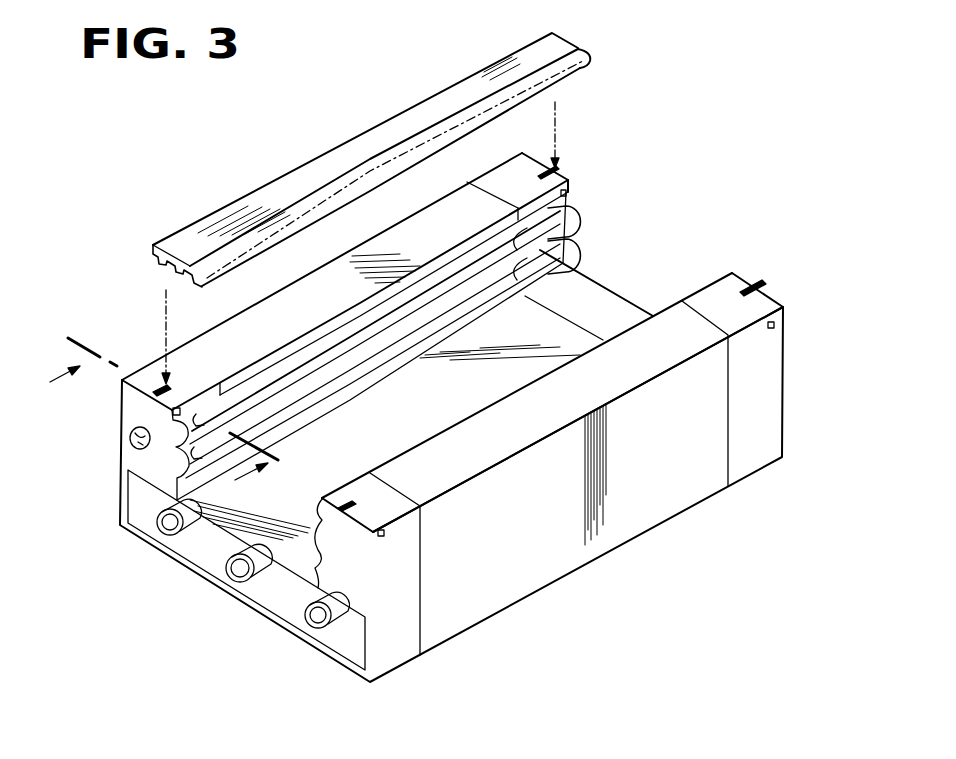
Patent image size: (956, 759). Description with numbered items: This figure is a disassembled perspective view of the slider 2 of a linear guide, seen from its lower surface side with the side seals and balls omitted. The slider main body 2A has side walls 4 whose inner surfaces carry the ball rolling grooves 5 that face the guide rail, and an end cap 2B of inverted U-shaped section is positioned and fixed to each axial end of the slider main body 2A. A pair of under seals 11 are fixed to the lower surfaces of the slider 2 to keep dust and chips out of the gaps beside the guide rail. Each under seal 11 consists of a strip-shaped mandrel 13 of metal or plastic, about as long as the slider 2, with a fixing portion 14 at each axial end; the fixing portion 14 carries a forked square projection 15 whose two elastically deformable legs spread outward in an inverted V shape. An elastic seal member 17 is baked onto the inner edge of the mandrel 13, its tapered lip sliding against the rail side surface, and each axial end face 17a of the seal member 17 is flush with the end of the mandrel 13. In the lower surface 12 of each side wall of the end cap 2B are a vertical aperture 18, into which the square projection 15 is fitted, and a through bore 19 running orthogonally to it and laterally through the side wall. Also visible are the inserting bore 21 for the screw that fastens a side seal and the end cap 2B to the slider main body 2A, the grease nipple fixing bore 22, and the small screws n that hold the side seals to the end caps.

The slider 2 is at (578, 568).
The slider main body 2A is at (497, 600).
The end cap 2B is at (388, 660).
The side wall 4 is at (353, 672).
The ball rolling groove 5 is at (372, 330).
The under seal 11 is at (308, 160).
The lower surface 12 is at (368, 495).
The mandrel 13 is at (387, 135).
The fixing portion 14 is at (143, 254).
The forked square projection 15 is at (100, 271).
The seal member 17 is at (550, 120).
The axial end face of seal member 17a is at (195, 283).
The vertical aperture 18 is at (157, 387).
The through bore 19 is at (170, 414).
The inserting bore of a screw 21 is at (162, 537).
The grease nipple fixing bore 22 is at (237, 575).
The small screw n is at (128, 443).